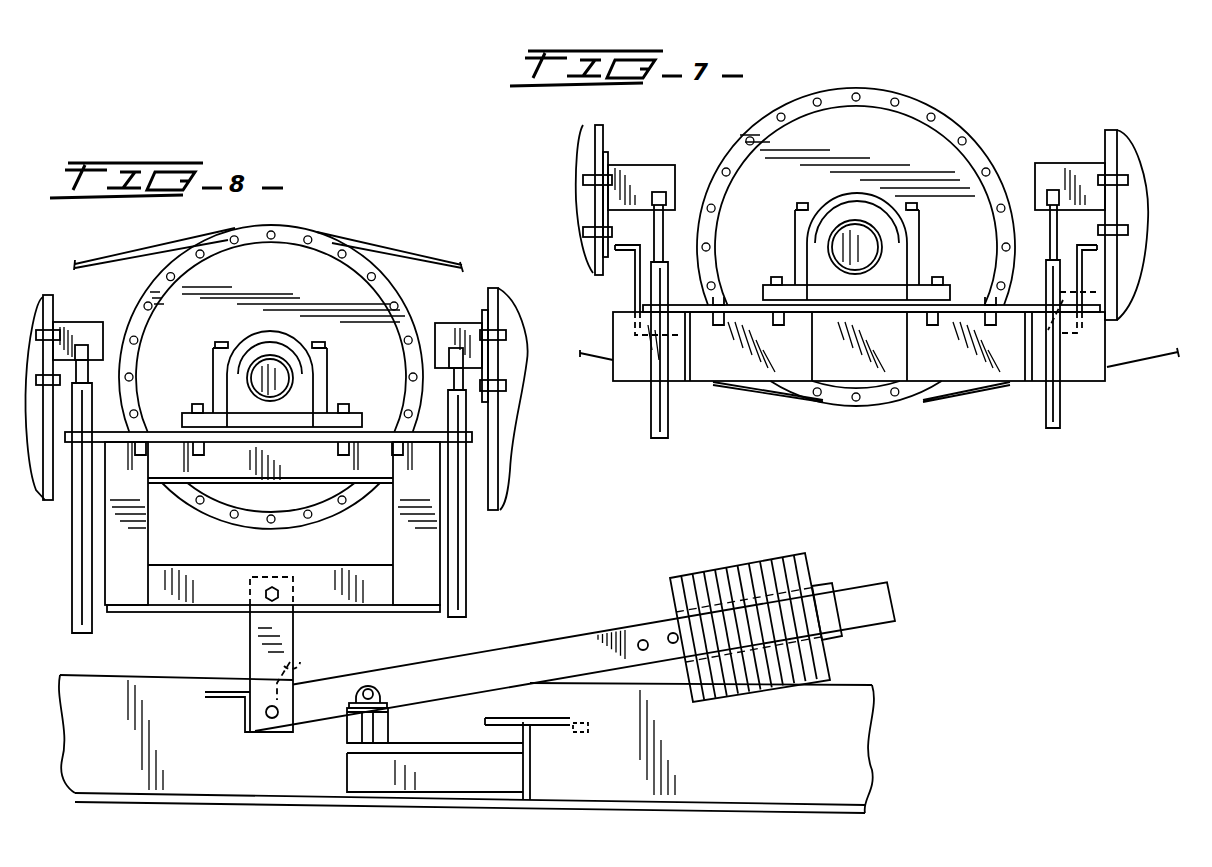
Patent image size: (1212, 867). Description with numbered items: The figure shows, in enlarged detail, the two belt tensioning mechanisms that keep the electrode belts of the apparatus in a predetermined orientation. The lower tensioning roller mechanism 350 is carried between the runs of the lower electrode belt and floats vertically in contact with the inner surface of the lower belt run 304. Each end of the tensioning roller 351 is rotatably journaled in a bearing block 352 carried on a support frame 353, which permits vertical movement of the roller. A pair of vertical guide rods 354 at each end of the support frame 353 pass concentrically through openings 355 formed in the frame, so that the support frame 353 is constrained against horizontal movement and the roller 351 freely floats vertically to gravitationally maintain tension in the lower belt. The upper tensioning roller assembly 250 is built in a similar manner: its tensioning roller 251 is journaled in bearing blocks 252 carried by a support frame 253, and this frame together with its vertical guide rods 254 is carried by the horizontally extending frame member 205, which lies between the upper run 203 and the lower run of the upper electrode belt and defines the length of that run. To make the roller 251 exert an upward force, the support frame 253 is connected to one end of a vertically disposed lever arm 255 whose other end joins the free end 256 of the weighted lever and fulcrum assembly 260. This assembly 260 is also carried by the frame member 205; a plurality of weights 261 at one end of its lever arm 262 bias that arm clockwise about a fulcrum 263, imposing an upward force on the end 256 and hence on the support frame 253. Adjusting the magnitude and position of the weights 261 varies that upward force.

In FIG. 8, the upper run of the upper electrode belt 203 is at (410, 250).
In FIG. 8, the horizontally extending frame member 205 is at (768, 757).
In FIG. 8, the tensioning roller assembly 250 is at (128, 540).
In FIG. 8, the tensioning roller 251 is at (292, 285).
In FIG. 8, the bearing blocks 252 is at (322, 418).
In FIG. 8, the support frame 253 is at (368, 593).
In FIG. 8, the vertical guide rods 254 is at (76, 560).
In FIG. 8, the lever arm 255 is at (252, 650).
In FIG. 8, the free end of the lever arm 256 is at (275, 684).
In FIG. 8, the weighted lever and fulcrum assembly 260 is at (413, 683).
In FIG. 8, the weights 261 is at (730, 562).
In FIG. 8, the lever arm 262 is at (564, 675).
In FIG. 8, the fulcrum 263 is at (357, 692).
In FIG. 7, the lower run of the lower electrode belt 304 is at (1144, 362).
In FIG. 7, the tensioning roller mechanism 350 is at (956, 121).
In FIG. 7, the tensioning roller 351 is at (828, 187).
In FIG. 7, the bearing block 352 is at (907, 292).
In FIG. 7, the support frame 353 is at (998, 367).
In FIG. 7, the vertical guide rods 354 is at (653, 425).
In FIG. 7, the openings 355 is at (655, 292).